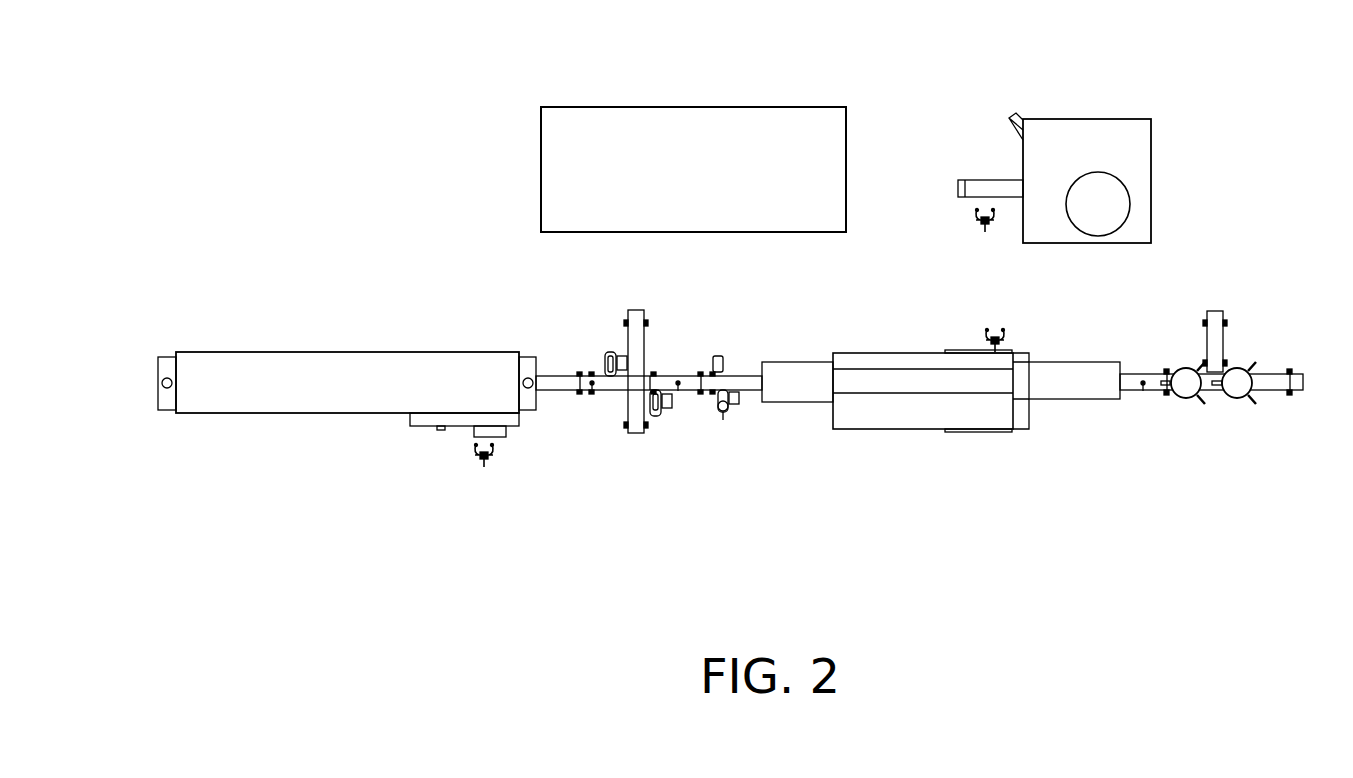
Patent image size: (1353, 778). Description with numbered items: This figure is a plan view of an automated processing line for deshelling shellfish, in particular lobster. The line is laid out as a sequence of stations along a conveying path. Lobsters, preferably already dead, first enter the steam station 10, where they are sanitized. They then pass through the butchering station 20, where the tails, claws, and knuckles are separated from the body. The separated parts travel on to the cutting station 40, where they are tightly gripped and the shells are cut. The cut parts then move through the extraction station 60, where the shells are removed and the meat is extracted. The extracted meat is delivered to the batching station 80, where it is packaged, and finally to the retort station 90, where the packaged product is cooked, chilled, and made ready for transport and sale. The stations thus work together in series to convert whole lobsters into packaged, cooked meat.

The steam station 10 is at (286, 402).
The butchering station 20 is at (636, 442).
The cutting station 40 is at (899, 419).
The extraction station 60 is at (1206, 428).
The batching station 80 is at (1143, 162).
The retort station 90 is at (711, 117).